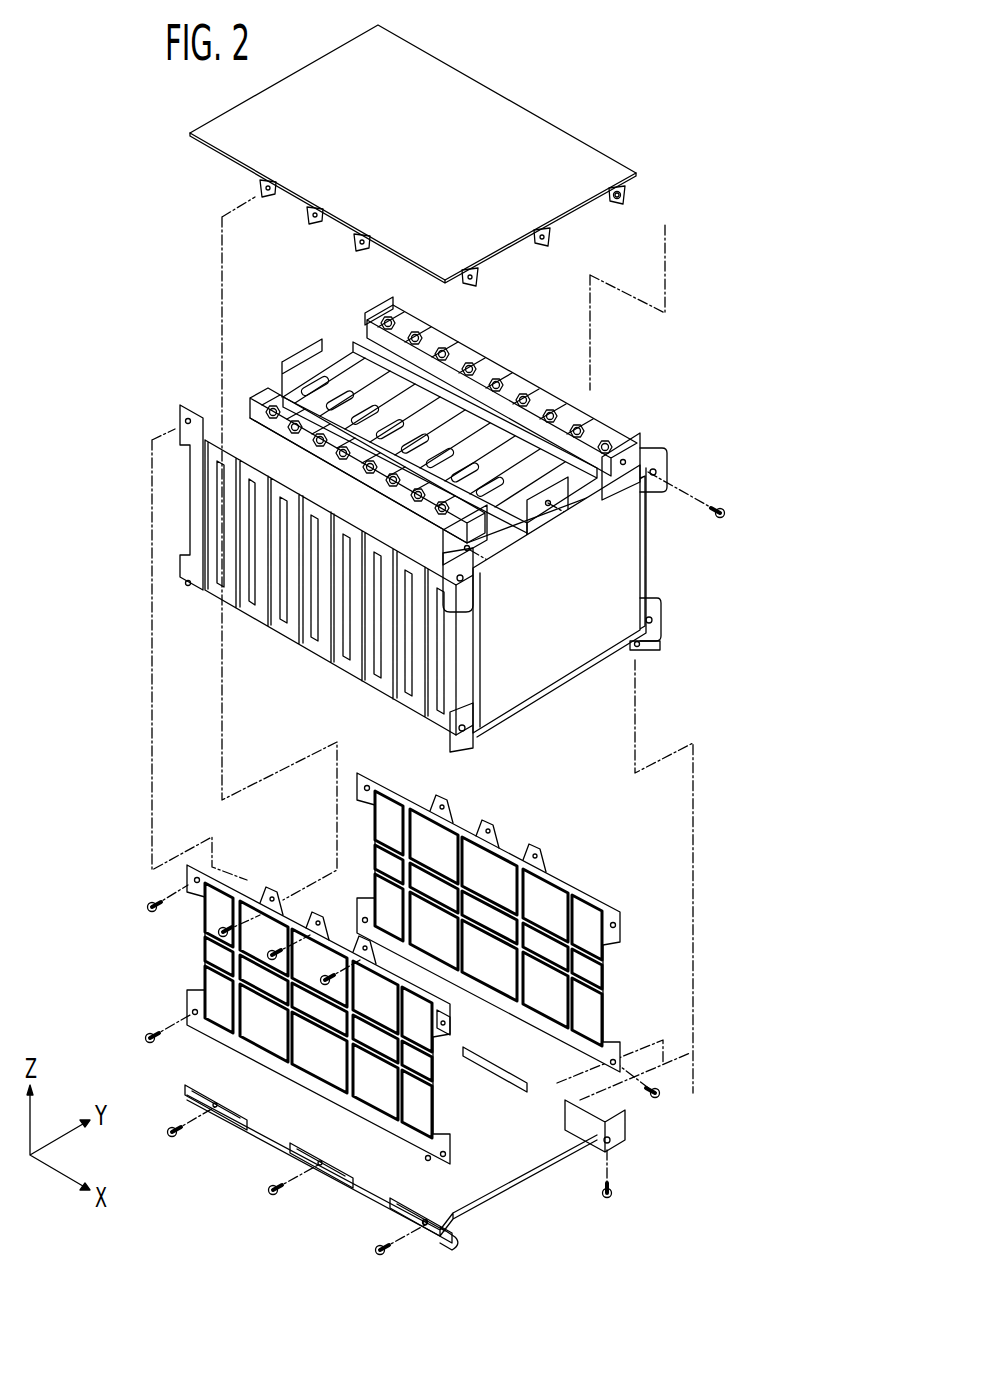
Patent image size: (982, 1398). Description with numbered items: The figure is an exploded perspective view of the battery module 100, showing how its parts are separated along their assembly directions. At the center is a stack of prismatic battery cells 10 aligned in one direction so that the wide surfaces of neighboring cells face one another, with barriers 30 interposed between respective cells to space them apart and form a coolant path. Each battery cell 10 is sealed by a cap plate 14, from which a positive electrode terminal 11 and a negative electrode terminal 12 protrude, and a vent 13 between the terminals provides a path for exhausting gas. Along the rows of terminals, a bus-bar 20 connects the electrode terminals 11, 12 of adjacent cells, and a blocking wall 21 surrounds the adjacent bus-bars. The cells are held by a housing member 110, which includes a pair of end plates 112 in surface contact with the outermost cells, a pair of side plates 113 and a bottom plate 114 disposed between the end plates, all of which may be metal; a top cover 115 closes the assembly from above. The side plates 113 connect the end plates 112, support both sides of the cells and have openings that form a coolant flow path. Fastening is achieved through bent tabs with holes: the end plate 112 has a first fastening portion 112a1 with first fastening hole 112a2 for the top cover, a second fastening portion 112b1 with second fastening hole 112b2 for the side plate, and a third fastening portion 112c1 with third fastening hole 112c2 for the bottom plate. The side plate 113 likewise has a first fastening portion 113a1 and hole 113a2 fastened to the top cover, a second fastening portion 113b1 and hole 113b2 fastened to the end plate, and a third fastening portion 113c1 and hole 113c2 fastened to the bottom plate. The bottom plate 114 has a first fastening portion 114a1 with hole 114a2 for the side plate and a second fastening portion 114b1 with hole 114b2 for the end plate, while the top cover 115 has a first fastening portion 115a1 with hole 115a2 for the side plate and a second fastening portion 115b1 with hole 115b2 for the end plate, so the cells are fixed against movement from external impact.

The battery module 100 is at (683, 104).
The battery cell 10 is at (425, 576).
The positive electrode terminal 11 is at (540, 392).
The negative electrode terminal 12 is at (567, 407).
The vent 13 is at (303, 380).
The cap plate 14 is at (427, 409).
The bus-bar 20 is at (501, 384).
The blocking wall 21 is at (415, 438).
The barrier 30 is at (287, 635).
The housing member 110 is at (362, 995).
The end plate 112 is at (537, 585).
The first fastening portion of end plate 112a1 is at (640, 433).
The first fastening hole of end plate 112a2 is at (632, 462).
The second fastening portion of end plate 112b1 is at (495, 595).
The second fastening hole of end plate 112b2 is at (470, 582).
The third fastening portion of end plate 112c1 is at (643, 637).
The third fastening hole of end plate 112c2 is at (647, 645).
The side plate 113 is at (567, 892).
The first fastening portion of side plate 113a1 is at (268, 898).
The first fastening hole of side plate 113a2 is at (275, 902).
The second fastening portion of side plate 113b1 is at (467, 1050).
The second fastening hole of side plate 113b2 is at (450, 1023).
The third fastening portion of side plate 113c1 is at (320, 1097).
The third fastening hole of side plate 113c2 is at (322, 1100).
The bottom plate 114 is at (448, 1180).
The first fastening portion of bottom plate 114a1 is at (440, 1237).
The first fastening hole of bottom plate 114a2 is at (425, 1226).
The second fastening portion of bottom plate 114b1 is at (597, 1138).
The second fastening hole of bottom plate 114b2 is at (610, 1142).
The top cover 115 is at (436, 155).
The first fastening portion of top cover 115a1 is at (257, 182).
The first fastening hole of top cover 115a2 is at (265, 200).
The second fastening portion of top cover 115b1 is at (630, 190).
The second fastening hole of top cover 115b2 is at (619, 199).